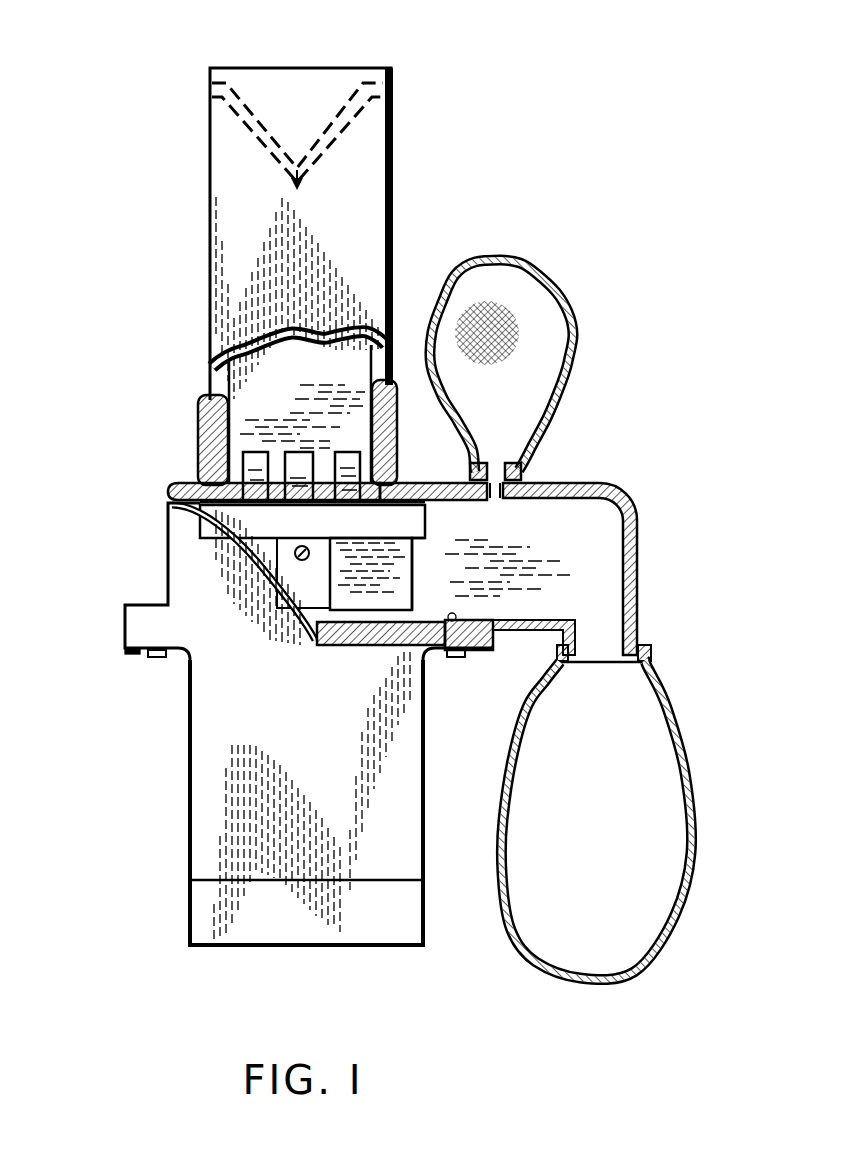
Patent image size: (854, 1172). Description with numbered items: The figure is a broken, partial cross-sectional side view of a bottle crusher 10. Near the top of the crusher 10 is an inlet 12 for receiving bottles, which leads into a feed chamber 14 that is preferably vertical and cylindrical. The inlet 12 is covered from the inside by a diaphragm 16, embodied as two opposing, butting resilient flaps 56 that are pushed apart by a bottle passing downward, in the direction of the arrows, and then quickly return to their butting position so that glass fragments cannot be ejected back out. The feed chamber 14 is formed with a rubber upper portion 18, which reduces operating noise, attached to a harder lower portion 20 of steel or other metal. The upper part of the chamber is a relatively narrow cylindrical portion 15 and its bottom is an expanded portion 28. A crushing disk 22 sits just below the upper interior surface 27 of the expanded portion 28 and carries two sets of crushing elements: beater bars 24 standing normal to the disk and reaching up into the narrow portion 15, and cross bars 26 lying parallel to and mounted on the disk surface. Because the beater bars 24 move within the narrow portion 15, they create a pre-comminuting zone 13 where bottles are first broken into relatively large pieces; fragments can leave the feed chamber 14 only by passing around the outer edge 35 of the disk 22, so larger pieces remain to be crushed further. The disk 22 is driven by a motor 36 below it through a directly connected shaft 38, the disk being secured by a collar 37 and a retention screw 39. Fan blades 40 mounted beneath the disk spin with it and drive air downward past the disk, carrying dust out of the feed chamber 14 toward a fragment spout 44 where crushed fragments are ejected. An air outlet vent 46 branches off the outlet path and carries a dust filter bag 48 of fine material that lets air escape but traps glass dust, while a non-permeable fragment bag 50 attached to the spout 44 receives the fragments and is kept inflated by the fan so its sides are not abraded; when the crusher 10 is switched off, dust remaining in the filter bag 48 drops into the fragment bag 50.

The bottle crusher 10 is at (138, 414).
The inlet 12 is at (315, 58).
The pre-comminuting zone 13 is at (327, 463).
The feed chamber 14 is at (274, 374).
The narrow cylindrical portion 15 is at (373, 313).
The diaphragm 16 is at (330, 118).
The rubber upper portion 18 is at (200, 254).
The lower portion 20 is at (155, 579).
The crushing disk 22 is at (247, 522).
The beater bars 24 is at (298, 455).
The cross bars 26 is at (425, 508).
The upper interior surface 27 is at (418, 483).
The expanded portion 28 is at (178, 482).
The outer edge 35 is at (405, 528).
The motor 36 is at (314, 782).
The collar 37 is at (300, 590).
The shaft 38 is at (327, 640).
The retention screw 39 is at (296, 559).
The fan blades 40 is at (432, 650).
The fragment spout 44 is at (633, 628).
The air outlet vent 46 is at (522, 470).
The dust filter bag 48 is at (575, 355).
The fragment bag 50 is at (697, 793).
The resilient flaps 56 is at (257, 135).